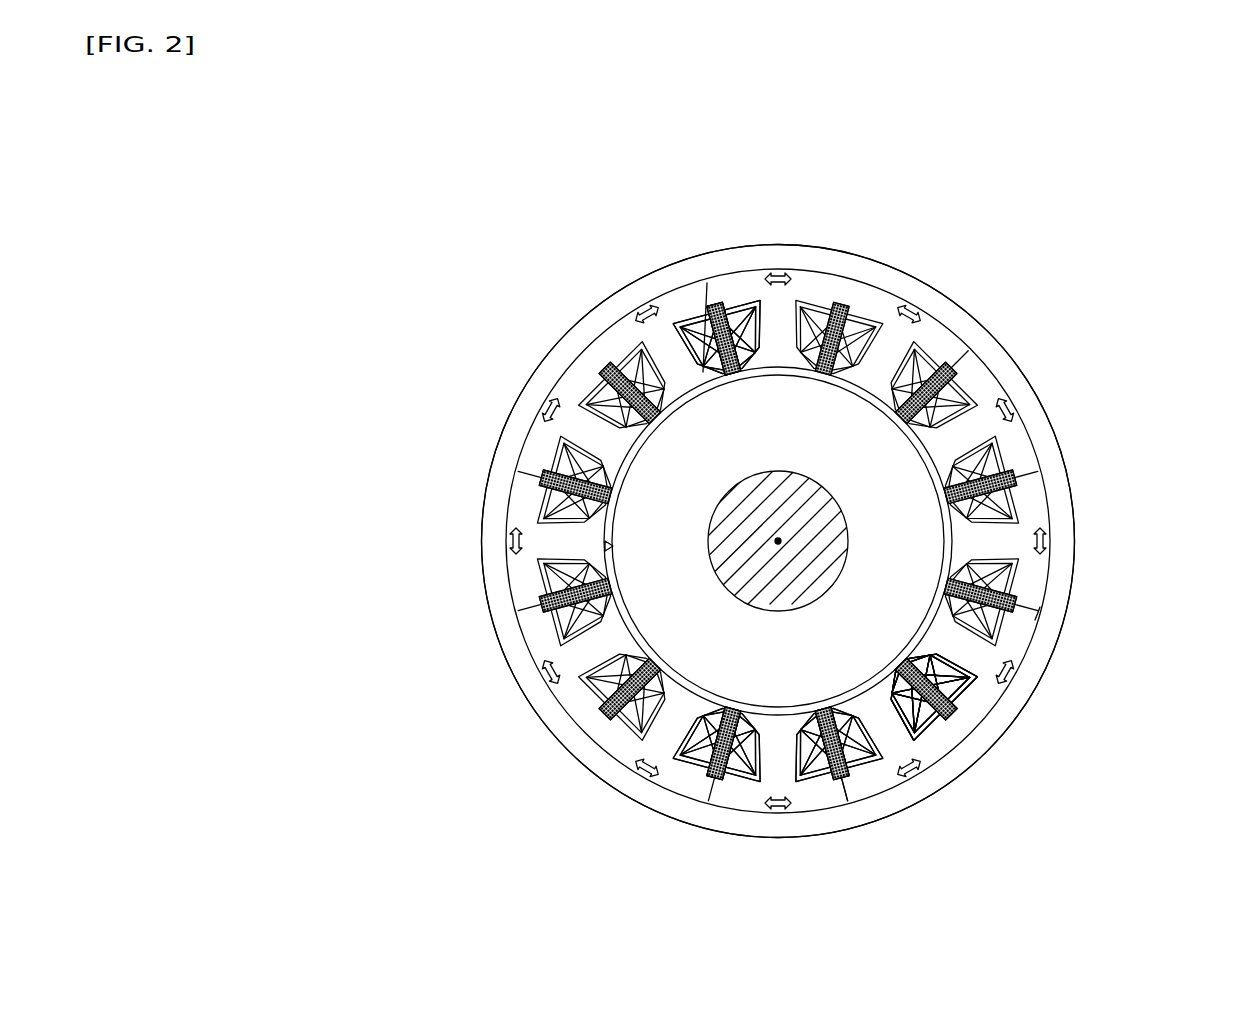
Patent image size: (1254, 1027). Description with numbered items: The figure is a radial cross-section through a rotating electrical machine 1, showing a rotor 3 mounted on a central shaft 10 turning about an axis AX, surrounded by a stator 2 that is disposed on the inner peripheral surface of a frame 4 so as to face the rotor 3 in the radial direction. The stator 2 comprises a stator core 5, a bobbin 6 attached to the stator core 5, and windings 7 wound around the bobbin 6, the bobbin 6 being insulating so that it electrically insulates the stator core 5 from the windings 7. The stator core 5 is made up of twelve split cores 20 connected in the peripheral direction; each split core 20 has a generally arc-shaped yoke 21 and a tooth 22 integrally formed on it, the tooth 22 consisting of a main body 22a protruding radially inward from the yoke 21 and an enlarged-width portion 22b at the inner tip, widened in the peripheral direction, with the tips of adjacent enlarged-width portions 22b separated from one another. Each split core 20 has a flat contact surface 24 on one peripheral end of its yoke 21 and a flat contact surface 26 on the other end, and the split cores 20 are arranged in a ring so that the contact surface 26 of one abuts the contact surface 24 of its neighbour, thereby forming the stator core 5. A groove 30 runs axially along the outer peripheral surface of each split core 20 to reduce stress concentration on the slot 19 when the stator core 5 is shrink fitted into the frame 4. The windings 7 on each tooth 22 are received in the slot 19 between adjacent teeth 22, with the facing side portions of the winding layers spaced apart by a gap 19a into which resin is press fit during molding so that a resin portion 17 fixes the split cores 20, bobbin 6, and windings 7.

The motor 1 is at (1152, 263).
The stator 2 is at (1147, 480).
The rotor 3 is at (555, 557).
The frame 4 is at (548, 363).
The stator core 5 is at (1030, 633).
The bobbin 6 is at (1010, 583).
The windings 7 is at (1003, 502).
The shaft 10 is at (724, 539).
The resin portion 17 is at (832, 310).
The slot 19 is at (682, 333).
The gap 19a is at (725, 337).
The split core 20 is at (980, 385).
The yoke 21 is at (955, 735).
The tooth 22 is at (948, 730).
The main body 22a is at (780, 755).
The enlarged-width portion 22b is at (787, 740).
The contact surface 24 is at (960, 716).
The contact surface 26 is at (852, 798).
The groove 30 is at (910, 303).
The rotation axis AX is at (781, 543).